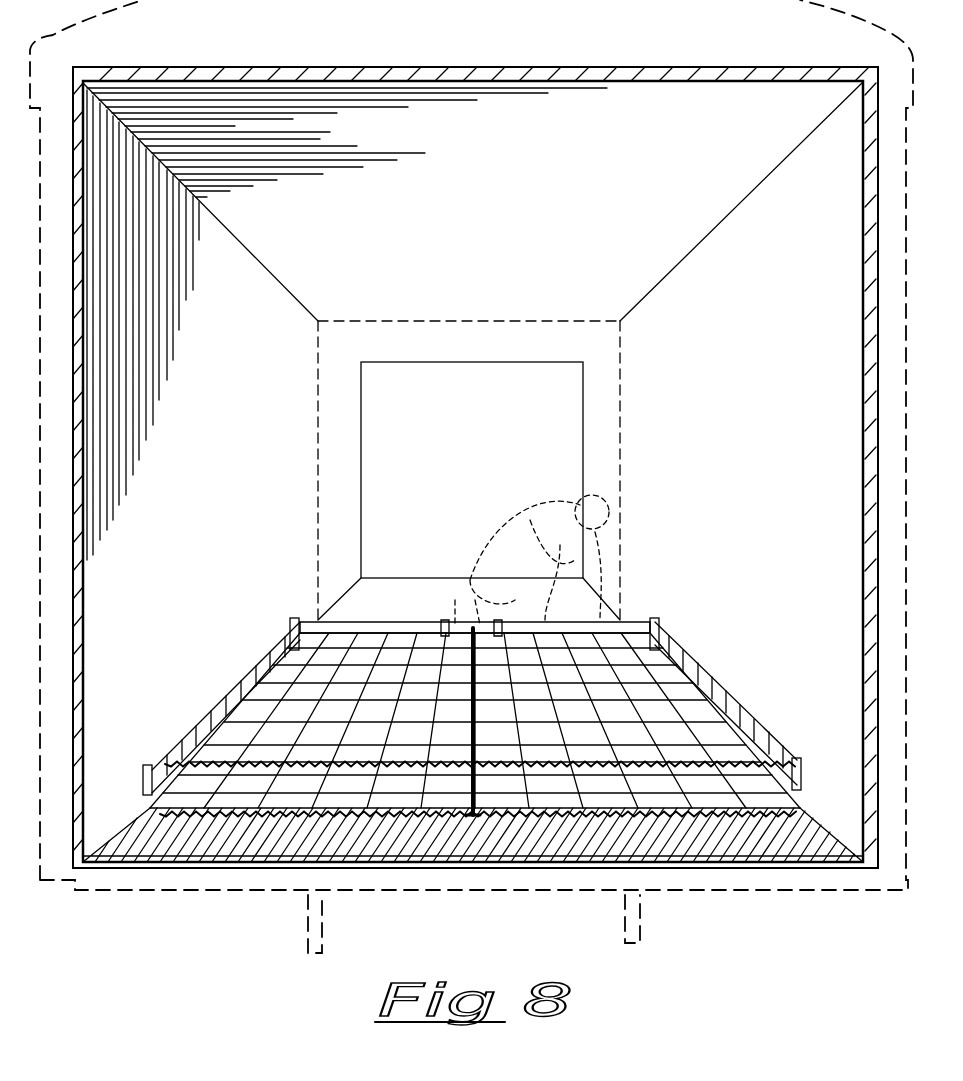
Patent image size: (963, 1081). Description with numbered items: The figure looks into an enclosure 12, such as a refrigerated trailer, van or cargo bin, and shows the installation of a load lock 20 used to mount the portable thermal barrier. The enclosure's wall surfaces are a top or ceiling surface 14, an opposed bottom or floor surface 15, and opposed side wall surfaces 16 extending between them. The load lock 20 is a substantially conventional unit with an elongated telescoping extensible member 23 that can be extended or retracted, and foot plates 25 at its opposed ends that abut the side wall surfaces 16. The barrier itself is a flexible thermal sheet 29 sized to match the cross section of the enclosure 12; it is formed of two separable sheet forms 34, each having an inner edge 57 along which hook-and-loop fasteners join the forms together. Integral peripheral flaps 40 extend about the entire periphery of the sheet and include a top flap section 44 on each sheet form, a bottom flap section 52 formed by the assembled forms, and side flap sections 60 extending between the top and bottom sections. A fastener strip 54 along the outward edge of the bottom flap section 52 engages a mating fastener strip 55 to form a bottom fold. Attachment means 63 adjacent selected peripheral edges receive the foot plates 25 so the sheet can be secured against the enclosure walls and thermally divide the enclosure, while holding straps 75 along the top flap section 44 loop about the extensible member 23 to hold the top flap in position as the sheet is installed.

The enclosure 12 is at (660, 46).
The top or ceiling surface 14 is at (535, 105).
The bottom or floor surface 15 is at (520, 860).
The side wall surfaces 16 is at (203, 484).
The load lock 20 is at (412, 616).
The extensible member 23 is at (360, 645).
The foot plates 25 is at (300, 618).
The thermal sheet 29 is at (645, 688).
The separable sheet forms 34 is at (448, 822).
The integral peripheral flaps 40 is at (202, 705).
The top flap section 44 is at (473, 620).
The bottom flap section 52 is at (165, 785).
The fastener strip 54 is at (340, 862).
The mating fastener strip 55 is at (745, 765).
The inner edge 57 is at (478, 706).
The side flap sections 60 is at (250, 672).
The attachment means 63 is at (284, 622).
The holding straps 75 is at (445, 636).